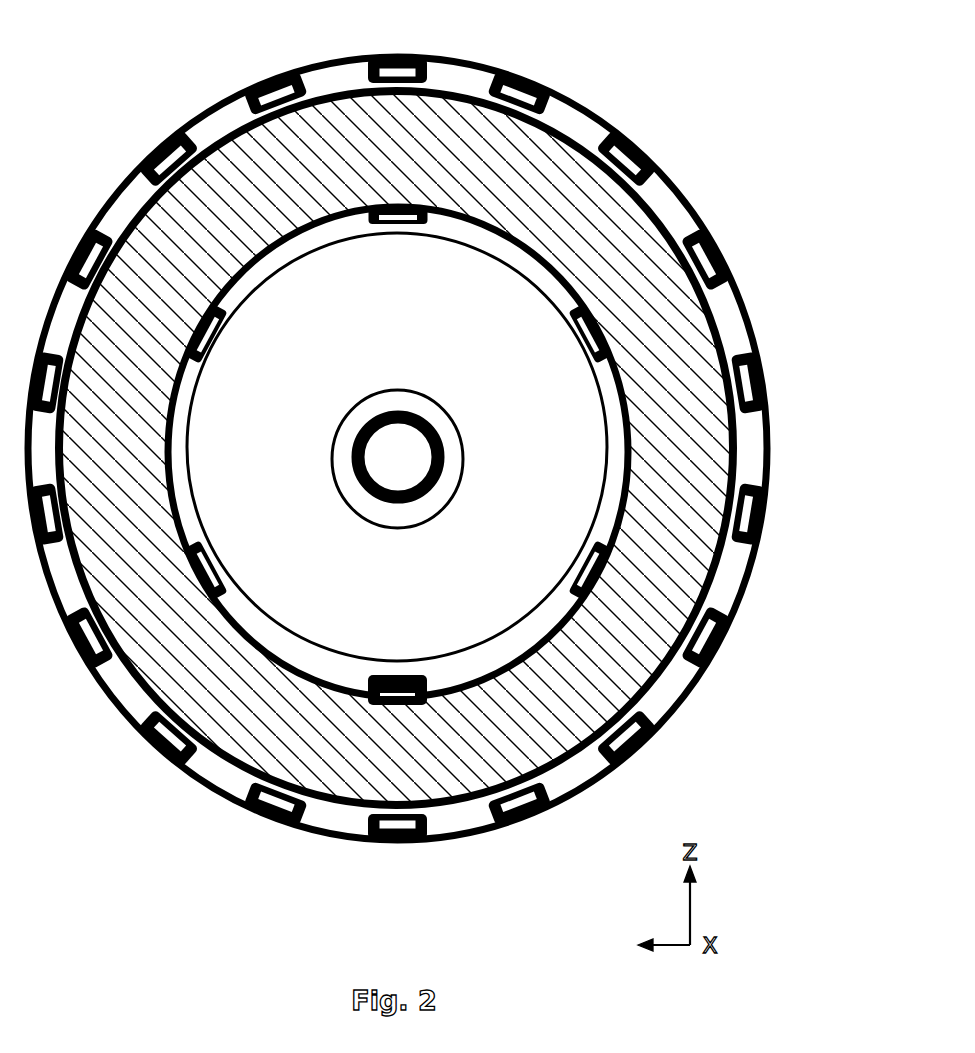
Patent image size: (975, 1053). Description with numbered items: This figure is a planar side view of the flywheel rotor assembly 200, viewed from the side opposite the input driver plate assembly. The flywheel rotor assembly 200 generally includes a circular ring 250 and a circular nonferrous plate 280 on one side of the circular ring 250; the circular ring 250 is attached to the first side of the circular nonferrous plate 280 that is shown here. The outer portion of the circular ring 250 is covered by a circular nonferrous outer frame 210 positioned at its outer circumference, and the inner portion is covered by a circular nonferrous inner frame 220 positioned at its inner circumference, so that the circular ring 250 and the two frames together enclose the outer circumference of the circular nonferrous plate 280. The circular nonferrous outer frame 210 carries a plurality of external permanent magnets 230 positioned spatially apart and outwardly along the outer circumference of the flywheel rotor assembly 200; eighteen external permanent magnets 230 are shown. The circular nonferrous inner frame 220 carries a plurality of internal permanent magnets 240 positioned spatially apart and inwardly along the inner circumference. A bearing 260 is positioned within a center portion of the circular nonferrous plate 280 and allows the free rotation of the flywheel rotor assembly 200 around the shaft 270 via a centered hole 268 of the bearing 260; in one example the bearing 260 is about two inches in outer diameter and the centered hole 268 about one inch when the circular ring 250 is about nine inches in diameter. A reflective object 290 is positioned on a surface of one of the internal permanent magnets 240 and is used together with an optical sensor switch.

The flywheel rotor assembly 200 is at (640, 63).
The circular nonferrous outer frame 210 is at (668, 210).
The circular nonferrous inner frame 220 is at (607, 440).
The external permanent magnets 230 is at (166, 148).
The internal permanent magnets 240 is at (208, 548).
The circular ring 250 is at (383, 766).
The bearing 260 is at (403, 412).
The centered hole 268 is at (441, 450).
The shaft 270 is at (378, 471).
The circular nonferrous plate 280 is at (395, 336).
The reflective object 290 is at (398, 676).